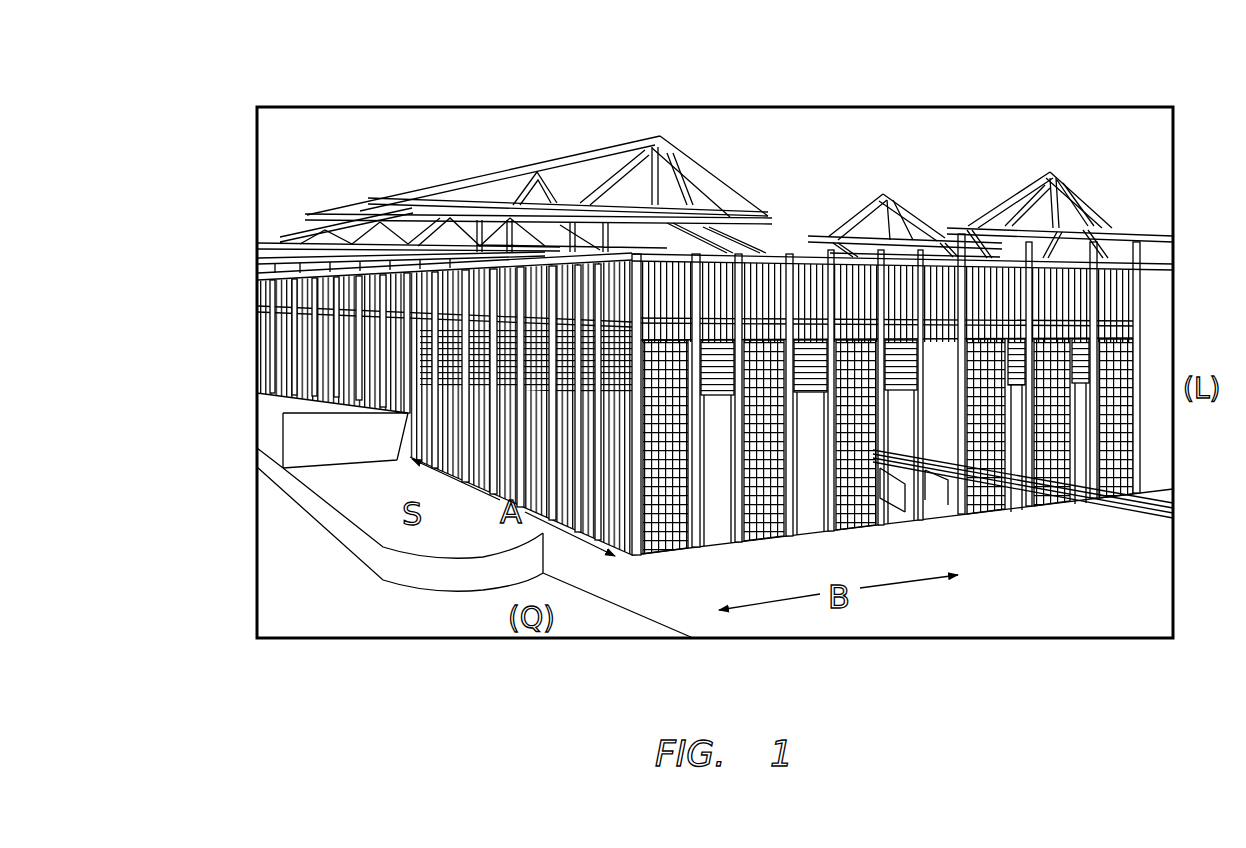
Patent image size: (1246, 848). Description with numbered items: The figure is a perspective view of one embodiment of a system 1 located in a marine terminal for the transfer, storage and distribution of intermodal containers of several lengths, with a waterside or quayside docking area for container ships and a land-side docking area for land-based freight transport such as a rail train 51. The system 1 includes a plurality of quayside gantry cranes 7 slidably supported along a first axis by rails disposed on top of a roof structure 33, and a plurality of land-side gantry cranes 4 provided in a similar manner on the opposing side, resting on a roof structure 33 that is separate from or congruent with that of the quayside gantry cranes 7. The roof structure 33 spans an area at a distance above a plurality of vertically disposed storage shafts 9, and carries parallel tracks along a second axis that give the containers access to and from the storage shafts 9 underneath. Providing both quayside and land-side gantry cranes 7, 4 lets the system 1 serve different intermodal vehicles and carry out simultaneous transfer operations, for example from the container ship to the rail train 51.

The system 1 is at (214, 111).
The quayside gantry cranes 7 is at (416, 172).
The land-side gantry cranes 4 is at (1006, 158).
The roof structure 33 is at (1148, 267).
The rail train 51 is at (945, 466).
The storage shafts 9 is at (852, 529).